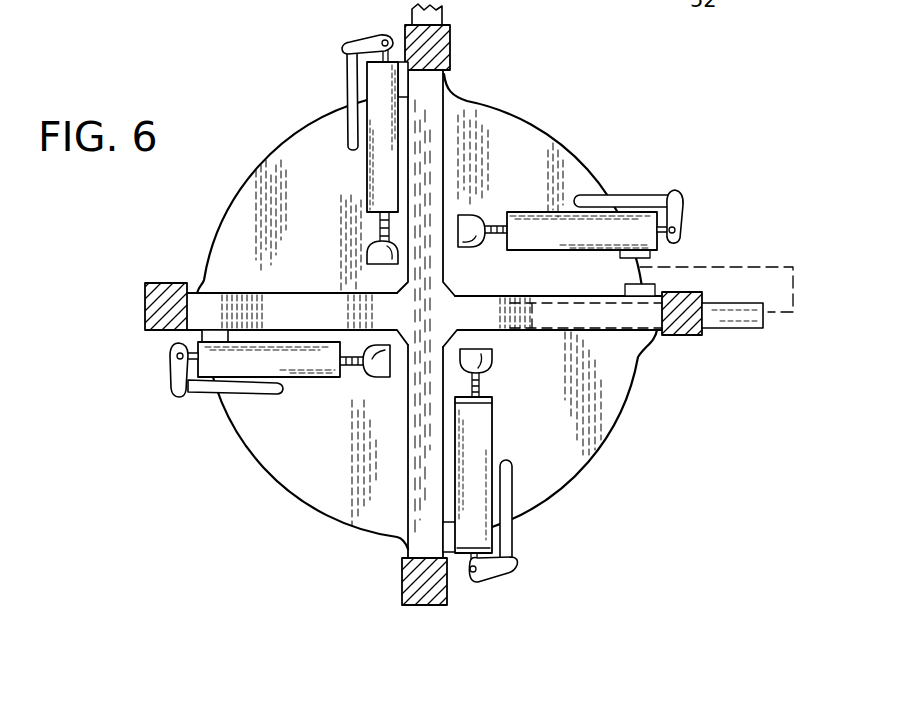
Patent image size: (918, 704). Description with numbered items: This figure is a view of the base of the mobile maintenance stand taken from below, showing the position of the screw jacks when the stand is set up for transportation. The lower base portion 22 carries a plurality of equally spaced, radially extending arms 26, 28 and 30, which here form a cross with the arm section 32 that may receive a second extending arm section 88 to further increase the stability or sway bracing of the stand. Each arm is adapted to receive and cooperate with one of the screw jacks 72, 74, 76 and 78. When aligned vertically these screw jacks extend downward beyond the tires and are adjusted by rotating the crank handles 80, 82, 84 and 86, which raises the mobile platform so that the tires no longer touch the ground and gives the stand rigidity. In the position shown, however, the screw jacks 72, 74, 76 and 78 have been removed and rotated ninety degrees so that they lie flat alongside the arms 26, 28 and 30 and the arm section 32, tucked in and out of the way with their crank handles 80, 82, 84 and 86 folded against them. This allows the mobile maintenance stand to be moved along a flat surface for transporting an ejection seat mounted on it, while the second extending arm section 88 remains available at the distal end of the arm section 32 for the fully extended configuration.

The lower base portion 22 is at (518, 142).
The radially extending arm 26 is at (418, 503).
The radially extending arm 28 is at (205, 300).
The radially extending arm 30 is at (427, 88).
The arm section 32 is at (602, 337).
The screw jack 72 is at (372, 177).
The screw jack 74 is at (542, 188).
The screw jack 76 is at (478, 442).
The screw jack 78 is at (330, 370).
The crank handle 80 is at (363, 43).
The crank handle 82 is at (673, 210).
The crank handle 84 is at (493, 575).
The crank handle 86 is at (173, 373).
The second extending arm section 88 is at (440, 16).